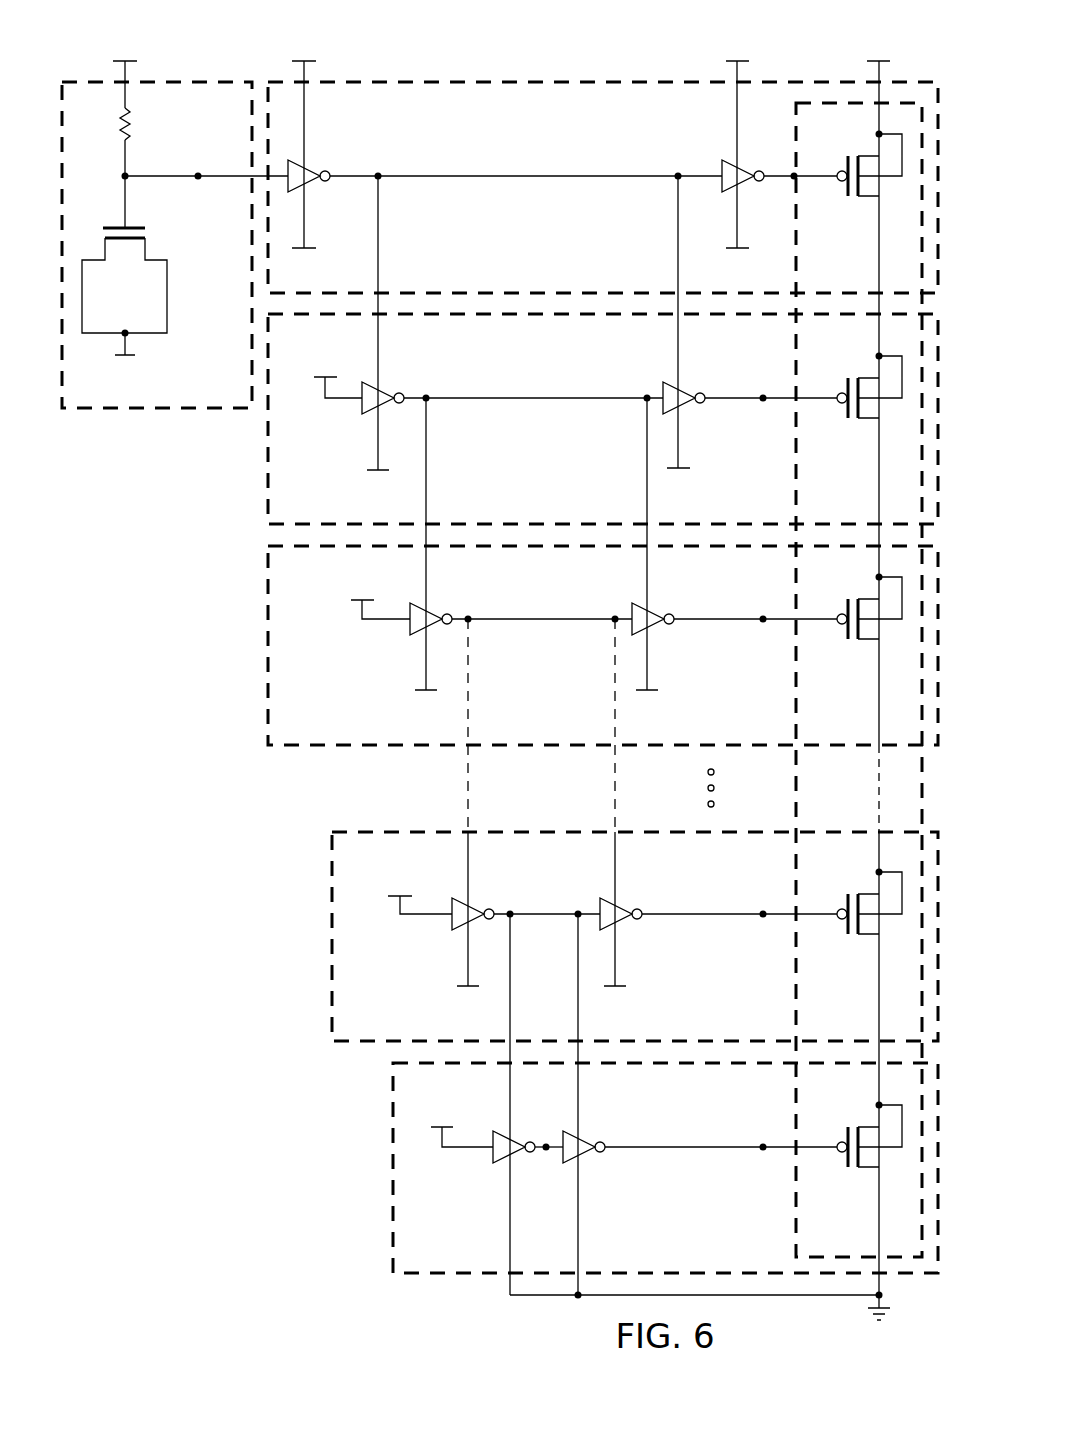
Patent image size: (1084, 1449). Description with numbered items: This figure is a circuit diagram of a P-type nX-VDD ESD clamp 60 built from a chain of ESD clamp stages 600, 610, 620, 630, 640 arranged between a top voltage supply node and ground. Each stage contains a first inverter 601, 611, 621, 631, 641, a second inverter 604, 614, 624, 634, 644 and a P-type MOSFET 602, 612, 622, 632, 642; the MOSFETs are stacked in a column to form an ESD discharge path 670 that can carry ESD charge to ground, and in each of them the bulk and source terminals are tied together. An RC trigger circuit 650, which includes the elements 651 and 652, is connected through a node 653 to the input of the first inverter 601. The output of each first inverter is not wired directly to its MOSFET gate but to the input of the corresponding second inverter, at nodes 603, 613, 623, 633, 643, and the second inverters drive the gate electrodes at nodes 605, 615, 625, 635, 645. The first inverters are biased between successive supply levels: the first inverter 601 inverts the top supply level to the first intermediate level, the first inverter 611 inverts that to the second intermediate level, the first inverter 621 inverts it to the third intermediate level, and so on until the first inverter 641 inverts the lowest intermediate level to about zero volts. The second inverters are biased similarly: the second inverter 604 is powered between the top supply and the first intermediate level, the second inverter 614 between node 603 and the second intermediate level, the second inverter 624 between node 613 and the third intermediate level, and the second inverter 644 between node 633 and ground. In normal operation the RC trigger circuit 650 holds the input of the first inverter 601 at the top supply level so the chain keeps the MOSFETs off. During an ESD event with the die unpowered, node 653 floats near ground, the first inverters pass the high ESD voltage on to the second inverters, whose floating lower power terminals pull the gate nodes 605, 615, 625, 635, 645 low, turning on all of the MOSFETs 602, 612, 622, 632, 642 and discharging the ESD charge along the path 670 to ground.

The P-type nX-VDD ESD clamp 60 is at (197, 1110).
The first clamp stage 600 is at (630, 81).
The first inverter 601 is at (312, 186).
The P-type MOSFET 602 is at (847, 198).
The node 603 is at (376, 169).
The second inverter 604 is at (722, 167).
The node 605 is at (790, 170).
The ESD clamp stage 610 is at (268, 471).
The first inverter 611 is at (362, 407).
The P-type MOSFET 612 is at (847, 420).
The node 613 is at (428, 392).
The second inverter 614 is at (688, 392).
The node 615 is at (763, 390).
The ESD clamp stage 620 is at (268, 673).
The first inverter 621 is at (410, 630).
The P-type MOSFET 622 is at (847, 641).
The node 623 is at (470, 612).
The second inverter 624 is at (656, 612).
The node 625 is at (763, 612).
The ESD clamp stage 630 is at (332, 987).
The first inverter 631 is at (452, 925).
The P-type MOSFET 632 is at (847, 936).
The node 633 is at (512, 907).
The second inverter 634 is at (624, 907).
The node 635 is at (763, 907).
The ESD clamp stage 640 is at (393, 1219).
The first inverter 641 is at (493, 1158).
The P-type MOSFET 642 is at (848, 1170).
The node 643 is at (546, 1140).
The second inverter 644 is at (595, 1143).
The node 645 is at (763, 1140).
The RC trigger circuit 650 is at (133, 408).
The resistor 651 is at (135, 116).
The transistor 652 is at (132, 226).
The node 653 is at (199, 170).
The ESD discharge path 670 is at (821, 102).